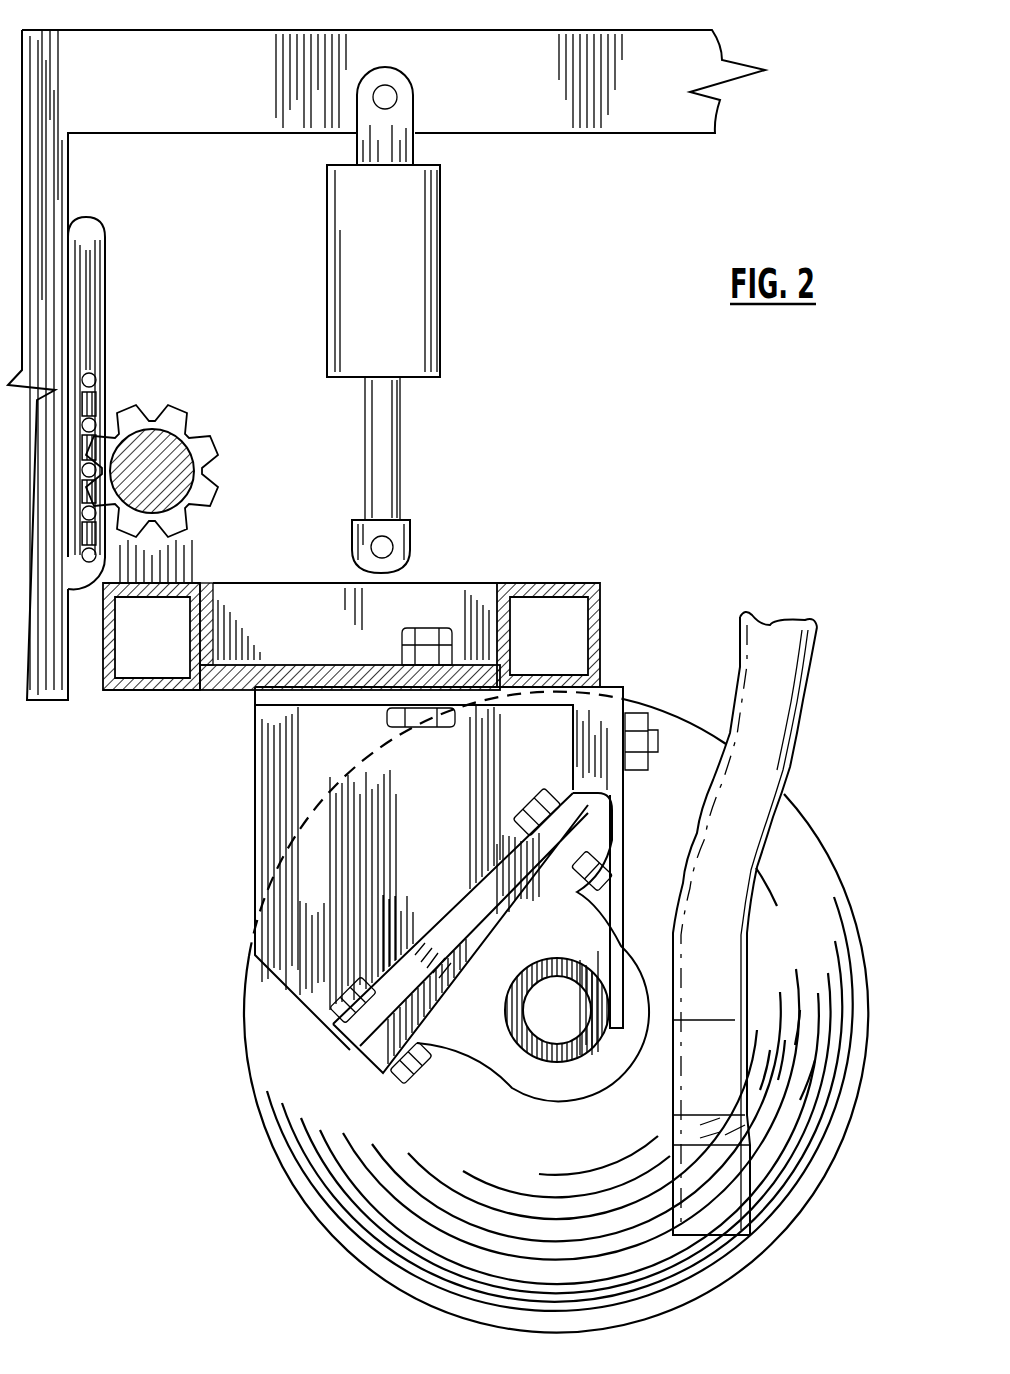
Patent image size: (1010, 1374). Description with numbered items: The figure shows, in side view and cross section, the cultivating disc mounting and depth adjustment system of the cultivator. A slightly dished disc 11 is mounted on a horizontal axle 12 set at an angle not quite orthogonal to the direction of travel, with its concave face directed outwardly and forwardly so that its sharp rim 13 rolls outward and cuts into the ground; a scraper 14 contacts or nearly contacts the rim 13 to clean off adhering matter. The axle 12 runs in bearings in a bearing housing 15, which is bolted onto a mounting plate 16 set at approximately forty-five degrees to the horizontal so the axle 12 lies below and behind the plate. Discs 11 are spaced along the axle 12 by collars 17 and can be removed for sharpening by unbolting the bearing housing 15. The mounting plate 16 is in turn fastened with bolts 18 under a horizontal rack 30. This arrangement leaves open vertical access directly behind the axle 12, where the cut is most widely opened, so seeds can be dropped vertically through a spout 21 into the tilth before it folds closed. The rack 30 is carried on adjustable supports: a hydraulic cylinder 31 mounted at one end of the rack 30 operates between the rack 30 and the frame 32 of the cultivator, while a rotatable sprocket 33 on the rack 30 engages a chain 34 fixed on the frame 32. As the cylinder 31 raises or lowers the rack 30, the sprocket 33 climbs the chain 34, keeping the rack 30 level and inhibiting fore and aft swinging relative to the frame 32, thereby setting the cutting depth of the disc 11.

The disc 11 is at (783, 863).
The axle 12 is at (577, 1028).
The rim 13 is at (680, 712).
The scraper 14 is at (617, 872).
The bearing housing 15 is at (497, 1058).
The mounting plate 16 is at (495, 862).
The collar 17 is at (563, 965).
The bolt 18 is at (380, 638).
The spout 21 is at (740, 1142).
The rack 30 is at (455, 583).
The hydraulic cylinder 31 is at (398, 291).
The frame 32 is at (540, 110).
The sprocket 33 is at (185, 410).
The chain 34 is at (100, 318).